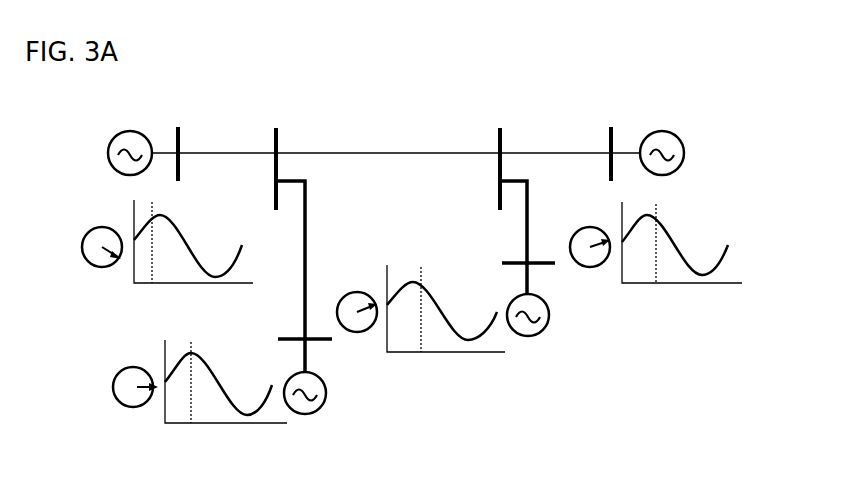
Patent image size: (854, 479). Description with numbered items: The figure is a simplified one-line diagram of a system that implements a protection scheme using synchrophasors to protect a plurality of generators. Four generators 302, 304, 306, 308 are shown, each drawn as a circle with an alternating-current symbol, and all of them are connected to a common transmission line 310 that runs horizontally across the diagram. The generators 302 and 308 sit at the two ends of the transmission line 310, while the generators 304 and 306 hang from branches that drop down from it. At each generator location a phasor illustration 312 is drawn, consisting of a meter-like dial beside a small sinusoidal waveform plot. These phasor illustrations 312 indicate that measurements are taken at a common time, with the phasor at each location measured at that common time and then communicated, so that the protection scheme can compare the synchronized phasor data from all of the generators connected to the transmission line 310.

The generator 302 is at (130, 131).
The generator 304 is at (303, 414).
The generator 306 is at (527, 337).
The generator 308 is at (662, 131).
The transmission line 310 is at (372, 153).
The phasor illustrations 312 is at (97, 227).